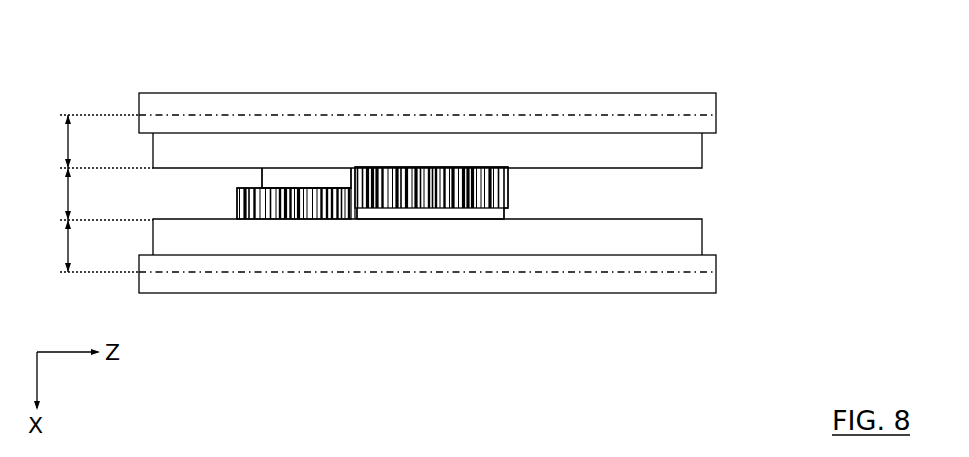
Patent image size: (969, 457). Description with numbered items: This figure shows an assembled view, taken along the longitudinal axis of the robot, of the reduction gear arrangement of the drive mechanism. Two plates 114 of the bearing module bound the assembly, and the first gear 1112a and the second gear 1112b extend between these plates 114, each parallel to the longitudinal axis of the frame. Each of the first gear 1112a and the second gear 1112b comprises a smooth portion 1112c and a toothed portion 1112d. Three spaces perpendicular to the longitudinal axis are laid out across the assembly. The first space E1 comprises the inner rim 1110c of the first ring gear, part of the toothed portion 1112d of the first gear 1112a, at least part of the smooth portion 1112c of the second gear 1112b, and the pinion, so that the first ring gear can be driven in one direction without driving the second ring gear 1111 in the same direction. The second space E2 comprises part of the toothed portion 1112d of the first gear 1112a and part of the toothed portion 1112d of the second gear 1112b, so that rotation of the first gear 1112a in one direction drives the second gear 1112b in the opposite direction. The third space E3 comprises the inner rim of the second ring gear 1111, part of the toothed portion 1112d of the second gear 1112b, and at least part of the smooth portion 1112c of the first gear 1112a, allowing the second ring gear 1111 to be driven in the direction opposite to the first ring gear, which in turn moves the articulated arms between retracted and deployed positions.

The plate 114 is at (655, 103).
The second ring gear 1111 is at (663, 155).
The inner rim 1110c is at (677, 242).
The first gear 1112a is at (127, 15).
The second gear 1112b is at (845, 178).
The smooth portion 1112c is at (322, 177).
The toothed portion 1112d is at (298, 205).
The first space E1 is at (82, 246).
The second space E2 is at (89, 194).
The third space E3 is at (89, 141).